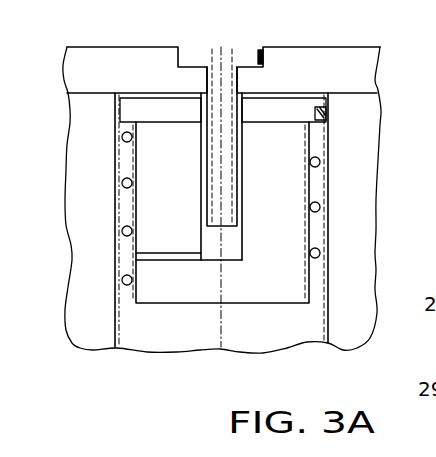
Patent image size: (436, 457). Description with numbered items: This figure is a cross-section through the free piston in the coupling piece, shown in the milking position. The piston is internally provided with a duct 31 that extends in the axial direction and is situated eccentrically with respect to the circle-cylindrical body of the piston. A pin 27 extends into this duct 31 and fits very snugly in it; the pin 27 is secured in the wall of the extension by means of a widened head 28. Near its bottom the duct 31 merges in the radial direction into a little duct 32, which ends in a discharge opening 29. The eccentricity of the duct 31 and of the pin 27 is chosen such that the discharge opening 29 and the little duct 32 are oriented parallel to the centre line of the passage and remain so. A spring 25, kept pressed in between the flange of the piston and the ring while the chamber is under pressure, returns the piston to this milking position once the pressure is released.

The spring 25 is at (122, 183).
The pin 27 is at (225, 88).
The widened head 28 is at (255, 176).
The discharge opening 29 is at (135, 255).
The duct 31 is at (230, 243).
The little duct 32 is at (182, 253).